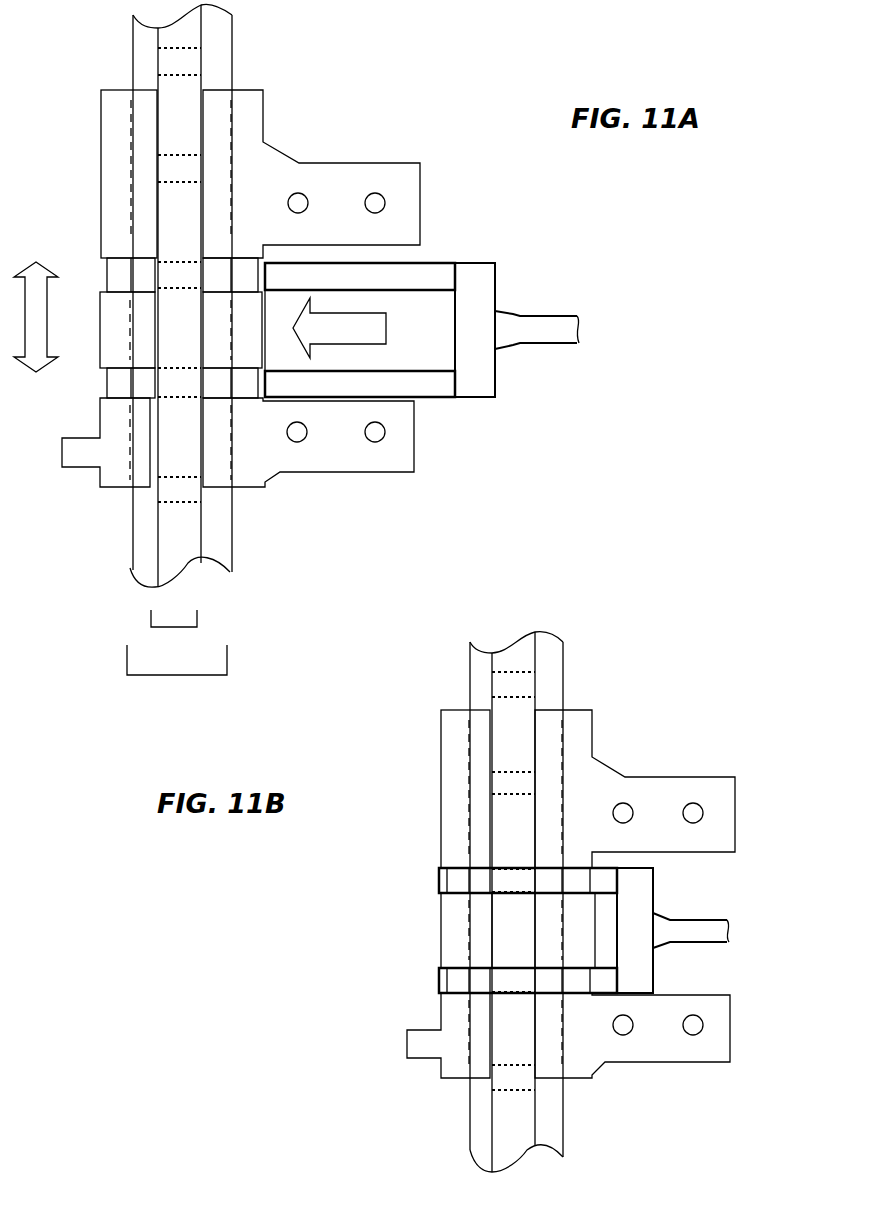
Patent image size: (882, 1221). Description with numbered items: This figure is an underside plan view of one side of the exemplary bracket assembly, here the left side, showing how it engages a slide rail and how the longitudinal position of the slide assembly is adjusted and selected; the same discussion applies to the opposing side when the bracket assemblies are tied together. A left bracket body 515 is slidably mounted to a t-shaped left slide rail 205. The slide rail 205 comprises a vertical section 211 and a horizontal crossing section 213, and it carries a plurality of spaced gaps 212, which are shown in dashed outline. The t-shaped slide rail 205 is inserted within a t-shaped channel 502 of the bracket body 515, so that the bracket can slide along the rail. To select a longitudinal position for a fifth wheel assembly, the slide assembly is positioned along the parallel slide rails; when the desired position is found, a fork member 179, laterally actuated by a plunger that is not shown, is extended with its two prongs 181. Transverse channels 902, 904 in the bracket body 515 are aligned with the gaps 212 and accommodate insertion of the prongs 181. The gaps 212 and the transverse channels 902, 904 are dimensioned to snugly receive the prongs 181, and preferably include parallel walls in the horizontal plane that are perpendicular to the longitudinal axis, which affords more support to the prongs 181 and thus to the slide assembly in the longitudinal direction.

In FIG. 11A, the fork member 179 is at (580, 312).
In FIG. 11B, the fork member 179 is at (708, 928).
In FIG. 11A, the prongs 181 is at (425, 263).
In FIG. 11B, the prongs 181 is at (440, 968).
In FIG. 11A, the left slide rail 205 is at (226, 66).
In FIG. 11B, the left slide rail 205 is at (518, 655).
In FIG. 11A, the vertical section 211 is at (172, 627).
In FIG. 11A, the spaced gaps 212 is at (178, 66).
In FIG. 11B, the spaced gaps 212 is at (512, 680).
In FIG. 11A, the horizontal crossing section 213 is at (182, 675).
In FIG. 11A, the t-shaped channel 502 is at (152, 115).
In FIG. 11B, the t-shaped channel 502 is at (485, 727).
In FIG. 11A, the left bracket body 515 is at (280, 161).
In FIG. 11B, the left bracket body 515 is at (592, 778).
In FIG. 11A, the transverse channel 902 is at (118, 383).
In FIG. 11B, the transverse channel 902 is at (435, 985).
In FIG. 11A, the transverse channel 904 is at (107, 270).
In FIG. 11B, the transverse channel 904 is at (442, 870).